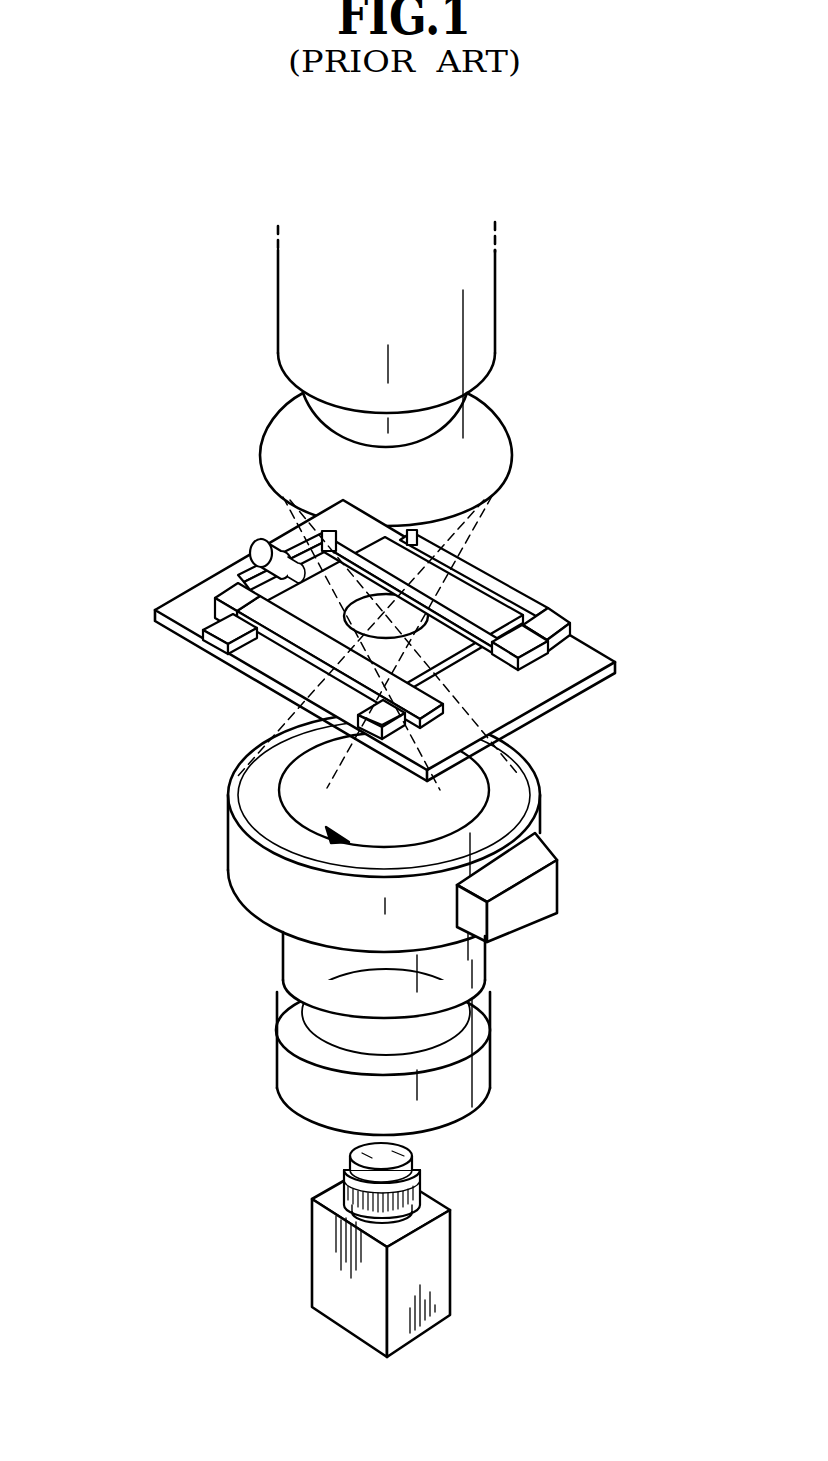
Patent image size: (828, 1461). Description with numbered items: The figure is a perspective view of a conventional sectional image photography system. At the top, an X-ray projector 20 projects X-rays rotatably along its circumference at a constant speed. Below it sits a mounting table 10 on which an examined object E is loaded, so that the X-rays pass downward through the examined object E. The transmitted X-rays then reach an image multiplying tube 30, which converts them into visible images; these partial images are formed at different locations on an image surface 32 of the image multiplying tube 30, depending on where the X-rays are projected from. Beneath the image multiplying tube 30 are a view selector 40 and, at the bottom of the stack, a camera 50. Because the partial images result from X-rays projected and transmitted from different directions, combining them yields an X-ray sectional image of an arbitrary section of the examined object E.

The mounting table 10 is at (567, 672).
The X-ray projector 20 is at (473, 314).
The image multiplying tube 30 is at (530, 836).
The image surface 32 is at (270, 782).
The view selector 40 is at (477, 1065).
The camera 50 is at (432, 1262).
The examined object E is at (470, 603).